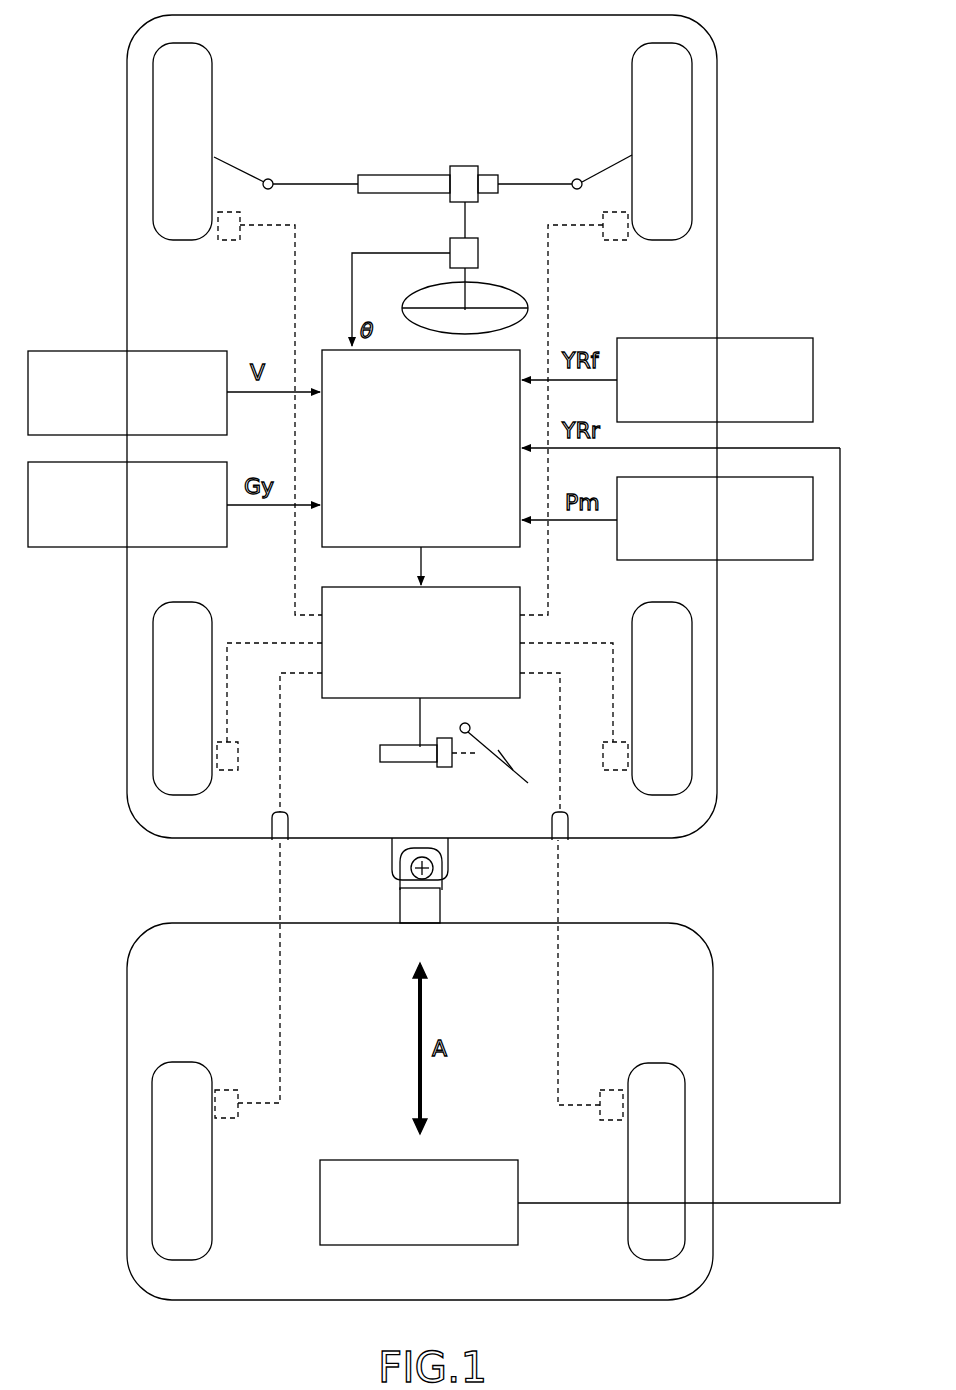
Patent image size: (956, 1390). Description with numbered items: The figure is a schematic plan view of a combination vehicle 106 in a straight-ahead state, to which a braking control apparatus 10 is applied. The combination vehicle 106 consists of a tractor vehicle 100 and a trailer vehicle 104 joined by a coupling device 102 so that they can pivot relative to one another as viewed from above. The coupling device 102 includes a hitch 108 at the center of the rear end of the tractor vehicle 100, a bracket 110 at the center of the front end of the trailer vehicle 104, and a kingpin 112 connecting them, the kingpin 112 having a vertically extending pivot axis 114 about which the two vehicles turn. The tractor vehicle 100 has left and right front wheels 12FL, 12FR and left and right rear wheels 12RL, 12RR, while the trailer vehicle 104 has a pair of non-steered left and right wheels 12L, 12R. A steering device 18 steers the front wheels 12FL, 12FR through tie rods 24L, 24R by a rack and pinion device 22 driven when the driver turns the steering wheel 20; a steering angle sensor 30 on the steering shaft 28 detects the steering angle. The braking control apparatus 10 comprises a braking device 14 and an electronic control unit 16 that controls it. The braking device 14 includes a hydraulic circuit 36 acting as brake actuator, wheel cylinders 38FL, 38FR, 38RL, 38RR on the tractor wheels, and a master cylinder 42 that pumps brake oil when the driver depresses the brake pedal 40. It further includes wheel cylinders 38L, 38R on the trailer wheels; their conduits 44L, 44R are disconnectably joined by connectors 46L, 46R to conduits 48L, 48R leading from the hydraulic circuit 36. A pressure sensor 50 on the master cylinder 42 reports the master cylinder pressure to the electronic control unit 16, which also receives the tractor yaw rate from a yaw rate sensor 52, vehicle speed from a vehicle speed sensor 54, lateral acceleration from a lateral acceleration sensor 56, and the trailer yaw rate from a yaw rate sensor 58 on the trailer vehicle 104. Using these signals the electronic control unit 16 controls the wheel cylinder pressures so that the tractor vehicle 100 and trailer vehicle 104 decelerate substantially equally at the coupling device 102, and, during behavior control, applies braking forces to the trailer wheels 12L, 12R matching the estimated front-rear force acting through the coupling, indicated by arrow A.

The braking control apparatus 10 is at (145, 306).
The left front wheel 12FL is at (153, 140).
The right front wheel 12FR is at (692, 142).
The left rear wheel 12RL is at (153, 705).
The right rear wheel 12RR is at (692, 705).
The left wheel of trailer vehicle 12L is at (152, 1165).
The right wheel of trailer vehicle 12R is at (685, 1165).
The braking device 14 is at (419, 746).
The electronic control unit 16 is at (421, 448).
The steering device 18 is at (423, 202).
The steering wheel 20 is at (432, 294).
The rack and pinion device 22 is at (456, 168).
The left tie rod 24L is at (228, 168).
The right tie rod 24R is at (614, 170).
The steering shaft 28 is at (462, 216).
The steering angle sensor 30 is at (480, 252).
The hydraulic circuit 36 is at (421, 642).
The left front wheel cylinder 38FL is at (233, 240).
The right front wheel cylinder 38FR is at (616, 240).
The left rear wheel cylinder 38RL is at (230, 770).
The right rear wheel cylinder 38RR is at (618, 770).
The left trailer wheel cylinder 38L is at (228, 1118).
The right trailer wheel cylinder 38R is at (612, 1120).
The brake pedal 40 is at (506, 762).
The master cylinder 42 is at (412, 764).
The left trailer conduit 44L is at (280, 1006).
The right trailer conduit 44R is at (566, 1004).
The left connector 46L is at (274, 846).
The right connector 46R is at (566, 846).
The left hydraulic circuit conduit 48L is at (272, 740).
The right hydraulic circuit conduit 48R is at (600, 720).
The pressure sensor 50 is at (750, 560).
The yaw rate sensor 52 is at (748, 338).
The vehicle speed sensor 54 is at (75, 351).
The lateral acceleration sensor 56 is at (75, 548).
The trailer yaw rate sensor 58 is at (365, 1160).
The tractor vehicle 100 is at (718, 274).
The coupling device 102 is at (390, 835).
The trailer vehicle 104 is at (713, 1008).
The combination vehicle 106 is at (720, 64).
The hitch 108 is at (445, 850).
The bracket 110 is at (425, 912).
The kingpin 112 is at (400, 876).
The pivot axis 114 is at (445, 885).